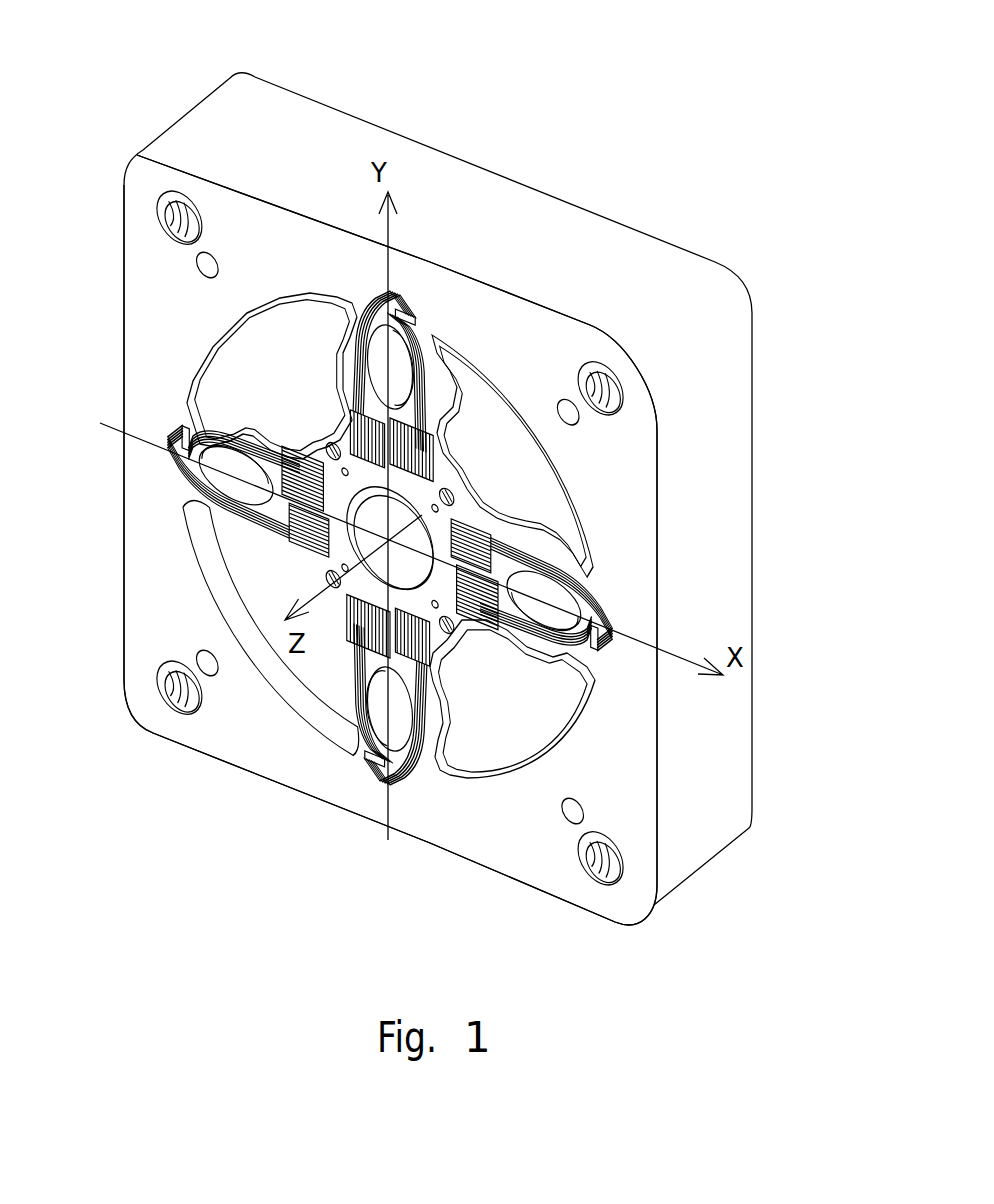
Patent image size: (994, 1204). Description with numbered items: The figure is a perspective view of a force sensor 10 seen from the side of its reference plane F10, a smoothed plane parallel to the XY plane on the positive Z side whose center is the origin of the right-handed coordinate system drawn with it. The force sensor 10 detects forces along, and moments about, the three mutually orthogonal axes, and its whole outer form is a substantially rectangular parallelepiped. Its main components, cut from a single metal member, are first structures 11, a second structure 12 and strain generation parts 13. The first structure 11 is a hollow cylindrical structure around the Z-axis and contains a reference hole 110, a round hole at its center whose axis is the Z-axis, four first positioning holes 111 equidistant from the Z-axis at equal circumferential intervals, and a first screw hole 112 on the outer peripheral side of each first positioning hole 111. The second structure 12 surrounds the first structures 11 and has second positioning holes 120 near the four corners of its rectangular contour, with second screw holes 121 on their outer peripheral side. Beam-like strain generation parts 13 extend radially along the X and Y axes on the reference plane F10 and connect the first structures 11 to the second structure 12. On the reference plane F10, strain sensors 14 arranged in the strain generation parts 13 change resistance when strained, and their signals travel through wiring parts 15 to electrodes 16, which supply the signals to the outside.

The force sensor 10 is at (140, 70).
The first structure 11 is at (317, 440).
The second structure 12 is at (124, 382).
The second positioning hole 120 is at (200, 262).
The second screw hole 121 is at (163, 235).
The reference plane F10 is at (147, 555).
The reference hole 110 is at (433, 510).
The first positioning hole 111 is at (470, 487).
The first screw hole 112 is at (370, 526).
The strain generation part 13 is at (578, 720).
The strain sensor 14 is at (616, 602).
The wiring part 15 is at (517, 640).
The electrode 16 is at (463, 623).